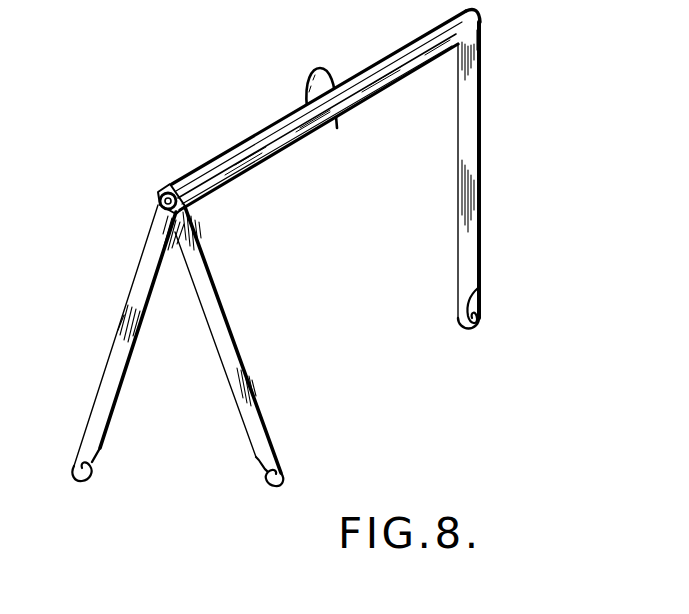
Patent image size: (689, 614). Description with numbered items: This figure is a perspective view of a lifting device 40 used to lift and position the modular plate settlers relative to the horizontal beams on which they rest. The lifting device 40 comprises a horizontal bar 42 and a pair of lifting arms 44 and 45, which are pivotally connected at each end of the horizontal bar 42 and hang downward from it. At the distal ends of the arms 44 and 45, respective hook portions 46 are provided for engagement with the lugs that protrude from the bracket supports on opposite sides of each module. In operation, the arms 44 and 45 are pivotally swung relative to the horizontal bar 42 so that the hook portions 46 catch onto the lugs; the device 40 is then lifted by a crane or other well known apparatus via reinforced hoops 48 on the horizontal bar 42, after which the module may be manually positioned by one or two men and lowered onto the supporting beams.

The lifting device 40 is at (274, 208).
The horizontal bar 42 is at (290, 145).
The lifting arm 44 is at (470, 173).
The lifting arm 45 is at (478, 301).
The hook portion 46 is at (98, 460).
The reinforced hoop 48 is at (347, 103).